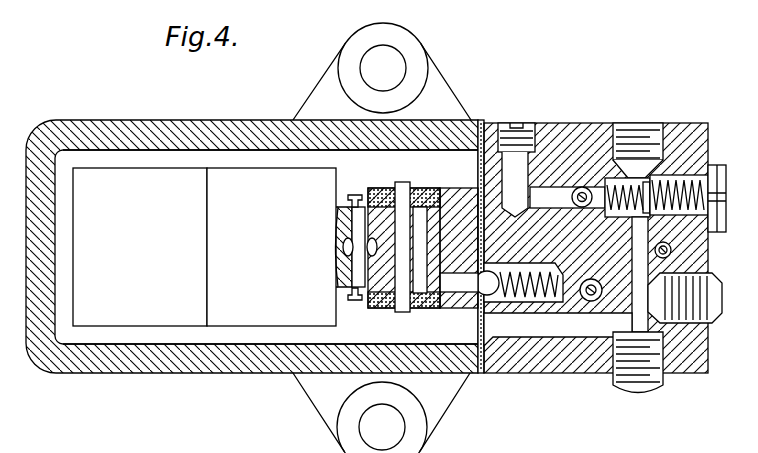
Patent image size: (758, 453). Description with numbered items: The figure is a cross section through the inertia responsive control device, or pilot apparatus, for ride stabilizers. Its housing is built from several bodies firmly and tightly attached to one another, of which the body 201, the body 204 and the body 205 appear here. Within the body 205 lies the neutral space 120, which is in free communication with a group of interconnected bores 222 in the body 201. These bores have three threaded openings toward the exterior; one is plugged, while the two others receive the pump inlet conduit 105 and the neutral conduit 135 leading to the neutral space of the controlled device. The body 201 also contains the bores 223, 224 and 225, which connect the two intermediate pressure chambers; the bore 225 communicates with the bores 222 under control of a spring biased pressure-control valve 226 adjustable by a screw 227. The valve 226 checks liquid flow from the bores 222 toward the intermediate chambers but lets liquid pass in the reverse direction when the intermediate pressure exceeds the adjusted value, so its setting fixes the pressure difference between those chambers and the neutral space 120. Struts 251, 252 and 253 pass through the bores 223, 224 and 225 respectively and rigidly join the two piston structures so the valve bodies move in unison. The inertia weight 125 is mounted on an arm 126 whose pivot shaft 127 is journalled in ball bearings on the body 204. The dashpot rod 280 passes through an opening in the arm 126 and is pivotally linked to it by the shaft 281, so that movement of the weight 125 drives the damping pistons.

The pump inlet conduit 105 is at (740, 278).
The neutral space 120 is at (189, 160).
The inertia weight 125 is at (113, 172).
The arm 126 is at (248, 175).
The pivot shaft 127 is at (403, 305).
The neutral conduit 135 is at (638, 387).
The body 201 is at (548, 148).
The body 204 is at (473, 185).
The body 205 is at (203, 365).
The interconnected bores 222 is at (635, 236).
The bore 223 is at (672, 249).
The bore 224 is at (571, 306).
The bore 225 is at (605, 185).
The pressure-control valve 226 is at (622, 148).
The screw 227 is at (720, 175).
The strut 251 is at (672, 252).
The strut 252 is at (593, 282).
The strut 253 is at (567, 197).
The rod 280 is at (340, 246).
The shaft 281 is at (343, 268).